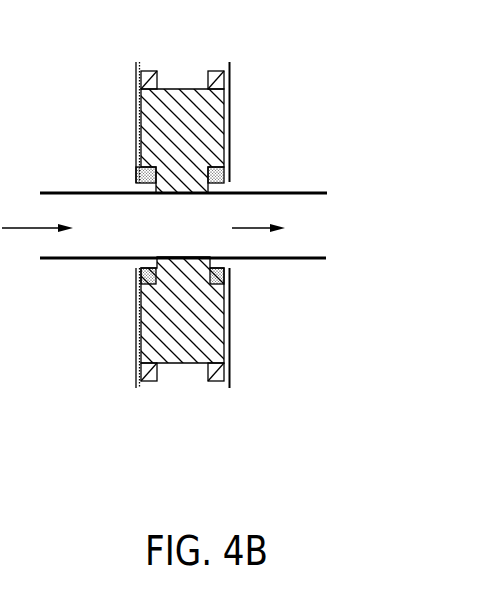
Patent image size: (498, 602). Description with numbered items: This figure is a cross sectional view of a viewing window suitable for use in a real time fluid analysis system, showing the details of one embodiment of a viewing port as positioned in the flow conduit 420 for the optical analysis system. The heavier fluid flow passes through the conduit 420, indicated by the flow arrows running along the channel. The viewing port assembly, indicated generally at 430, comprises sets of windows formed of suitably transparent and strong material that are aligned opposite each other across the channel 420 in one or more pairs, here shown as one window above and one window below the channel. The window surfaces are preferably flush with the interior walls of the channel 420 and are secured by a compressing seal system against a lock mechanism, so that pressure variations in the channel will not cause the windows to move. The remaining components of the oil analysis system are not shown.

The flow conduit 420 is at (302, 212).
The flow sensor assembly 430 is at (246, 221).